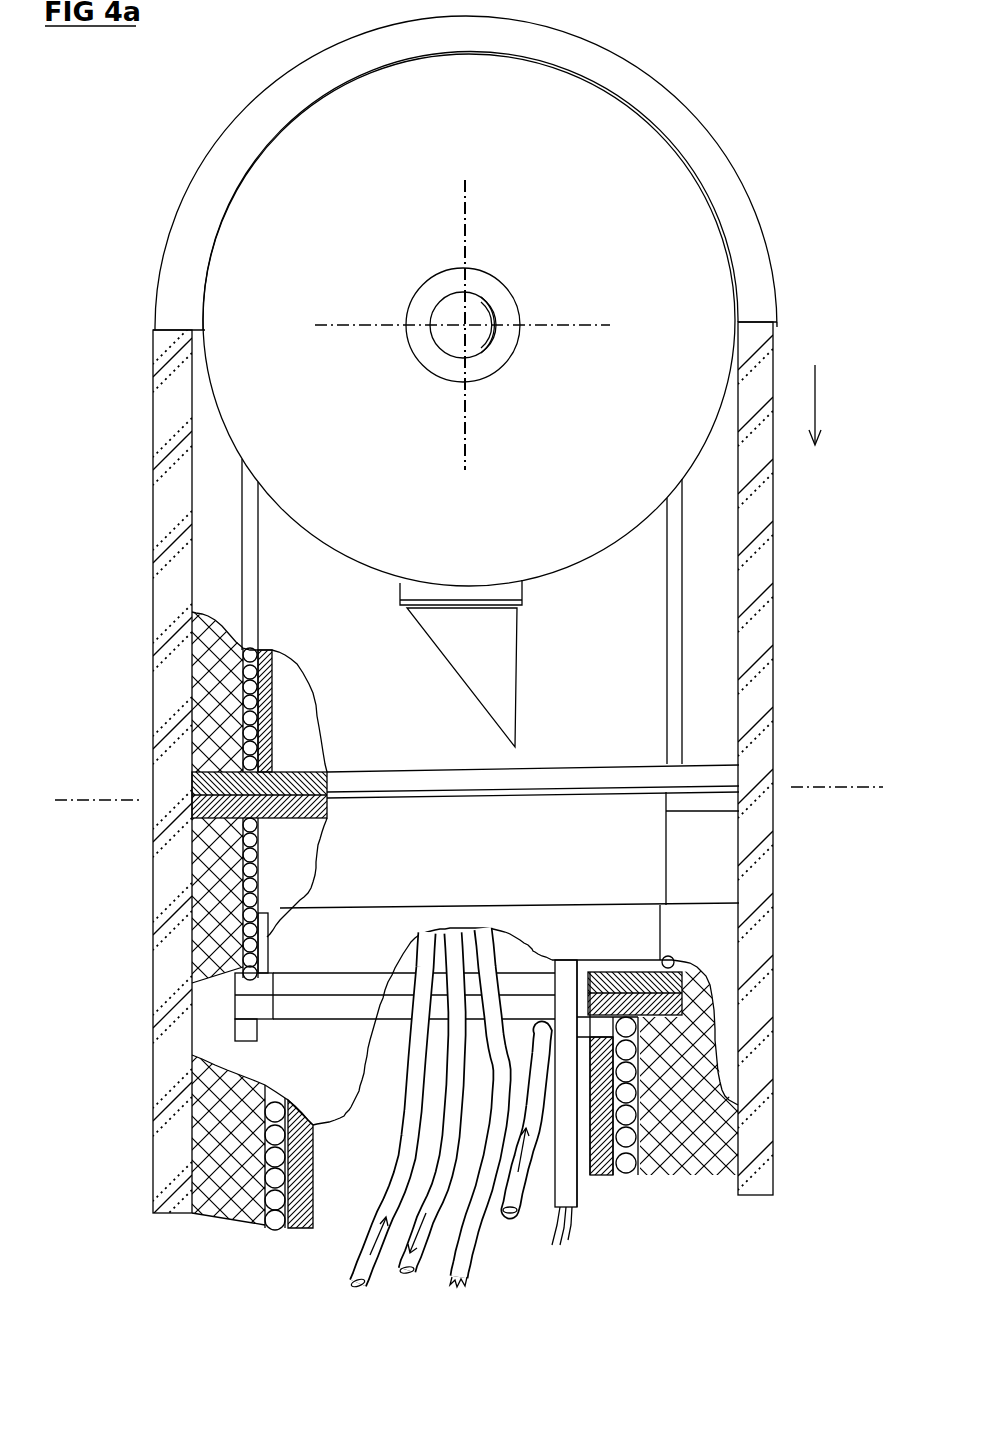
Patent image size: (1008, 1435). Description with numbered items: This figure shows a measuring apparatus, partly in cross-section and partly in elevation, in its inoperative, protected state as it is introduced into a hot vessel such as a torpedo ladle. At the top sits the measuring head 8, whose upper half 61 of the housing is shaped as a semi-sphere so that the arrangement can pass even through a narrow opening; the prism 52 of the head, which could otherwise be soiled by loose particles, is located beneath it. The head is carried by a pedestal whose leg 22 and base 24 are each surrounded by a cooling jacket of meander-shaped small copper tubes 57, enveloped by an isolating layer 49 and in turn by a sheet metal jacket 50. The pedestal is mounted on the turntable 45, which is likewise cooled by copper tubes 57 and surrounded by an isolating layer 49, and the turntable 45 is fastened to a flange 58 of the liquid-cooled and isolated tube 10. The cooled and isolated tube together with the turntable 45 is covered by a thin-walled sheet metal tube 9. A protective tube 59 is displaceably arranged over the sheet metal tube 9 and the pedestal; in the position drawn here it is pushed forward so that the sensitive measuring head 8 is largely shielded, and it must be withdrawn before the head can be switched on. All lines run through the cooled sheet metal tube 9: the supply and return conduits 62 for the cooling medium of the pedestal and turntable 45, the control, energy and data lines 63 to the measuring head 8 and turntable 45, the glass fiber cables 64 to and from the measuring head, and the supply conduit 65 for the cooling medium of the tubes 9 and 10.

The measuring head 8 is at (660, 394).
The sheet metal tube 9 is at (466, 866).
The tube 10 is at (640, 1150).
The leg 22 is at (290, 748).
The base 24 is at (192, 787).
The turntable 45 is at (277, 840).
The isolating layer 49 is at (205, 668).
The sheet metal jacket 50 is at (334, 622).
The prism 52 is at (487, 678).
The small copper tubes 57 is at (245, 703).
The flange 58 is at (690, 1010).
The tube 59 is at (752, 490).
The upper half of the housing 61 is at (740, 213).
The supply and return conduits for the cooling medium 62 is at (403, 1280).
The control lines, energy lines and data lines 63 is at (458, 1284).
The glass fiber cables 64 is at (575, 1225).
The supply conduit for the cooling medium 65 is at (511, 1215).